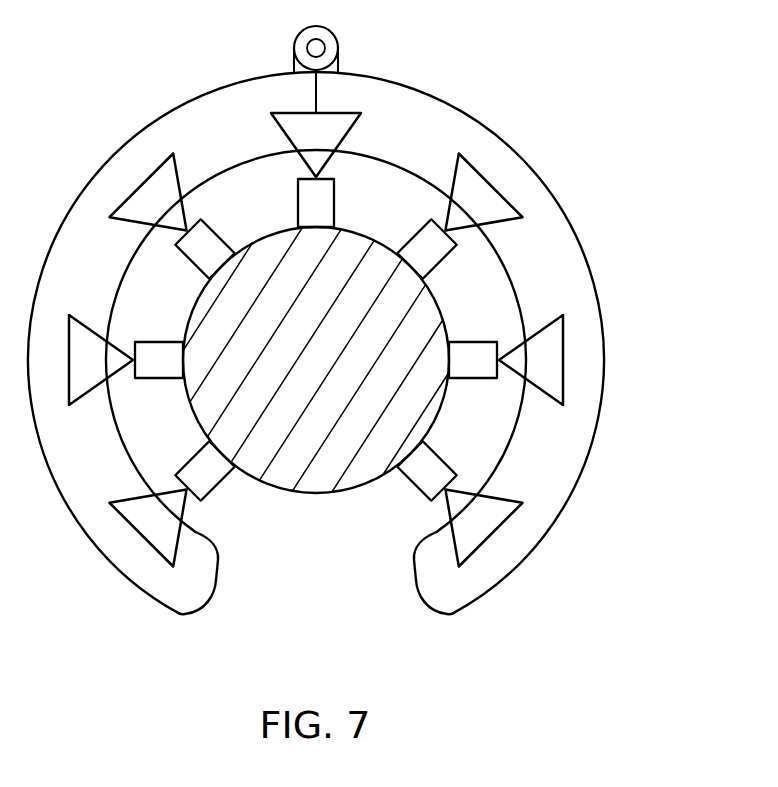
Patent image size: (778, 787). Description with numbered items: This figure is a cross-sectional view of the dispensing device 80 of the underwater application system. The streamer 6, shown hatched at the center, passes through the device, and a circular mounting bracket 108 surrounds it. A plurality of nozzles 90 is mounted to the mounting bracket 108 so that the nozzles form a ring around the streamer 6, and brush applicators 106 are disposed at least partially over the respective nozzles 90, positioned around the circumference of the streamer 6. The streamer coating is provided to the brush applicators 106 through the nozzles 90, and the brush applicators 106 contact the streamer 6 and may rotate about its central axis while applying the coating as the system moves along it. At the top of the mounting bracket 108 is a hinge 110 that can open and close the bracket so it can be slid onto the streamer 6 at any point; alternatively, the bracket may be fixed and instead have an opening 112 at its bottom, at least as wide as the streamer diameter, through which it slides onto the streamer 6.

The dispensing device 80 is at (316, 344).
The mounting bracket 108 is at (427, 92).
The hinge 110 is at (293, 50).
The opening 112 is at (348, 634).
The nozzles 90 is at (85, 322).
The brush applicators 106 is at (159, 343).
The streamer 6 is at (356, 494).